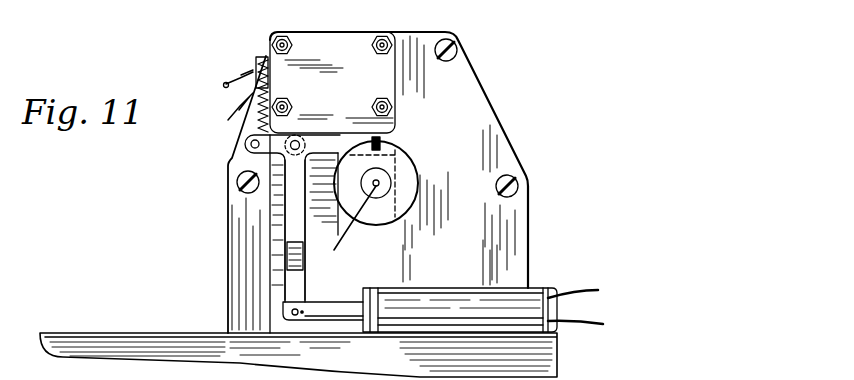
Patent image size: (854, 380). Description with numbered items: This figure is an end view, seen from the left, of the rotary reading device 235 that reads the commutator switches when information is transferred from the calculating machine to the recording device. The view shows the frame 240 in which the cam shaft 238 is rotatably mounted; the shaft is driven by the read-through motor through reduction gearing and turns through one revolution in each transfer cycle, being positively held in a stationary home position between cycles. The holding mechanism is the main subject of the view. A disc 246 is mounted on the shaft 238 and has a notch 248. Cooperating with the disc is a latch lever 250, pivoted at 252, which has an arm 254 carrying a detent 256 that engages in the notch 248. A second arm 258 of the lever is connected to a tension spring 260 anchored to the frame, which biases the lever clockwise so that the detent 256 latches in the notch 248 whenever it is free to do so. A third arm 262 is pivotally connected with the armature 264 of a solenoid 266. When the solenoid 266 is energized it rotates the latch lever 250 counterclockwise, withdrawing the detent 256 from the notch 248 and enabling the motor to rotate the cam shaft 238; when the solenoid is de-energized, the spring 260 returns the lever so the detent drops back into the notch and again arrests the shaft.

The rotary reading device 235 is at (478, 51).
The shaft 238 is at (348, 231).
The frame 240 is at (526, 241).
The disc 246 is at (405, 172).
The notch 248 is at (381, 141).
The latch lever 250 is at (284, 220).
The pivot 252 is at (298, 140).
The arm 254 is at (335, 137).
The detent 256 is at (395, 133).
The second arm 258 is at (246, 159).
The tension spring 260 is at (238, 105).
The third arm 262 is at (287, 260).
The armature 264 is at (338, 320).
The solenoid 266 is at (466, 328).